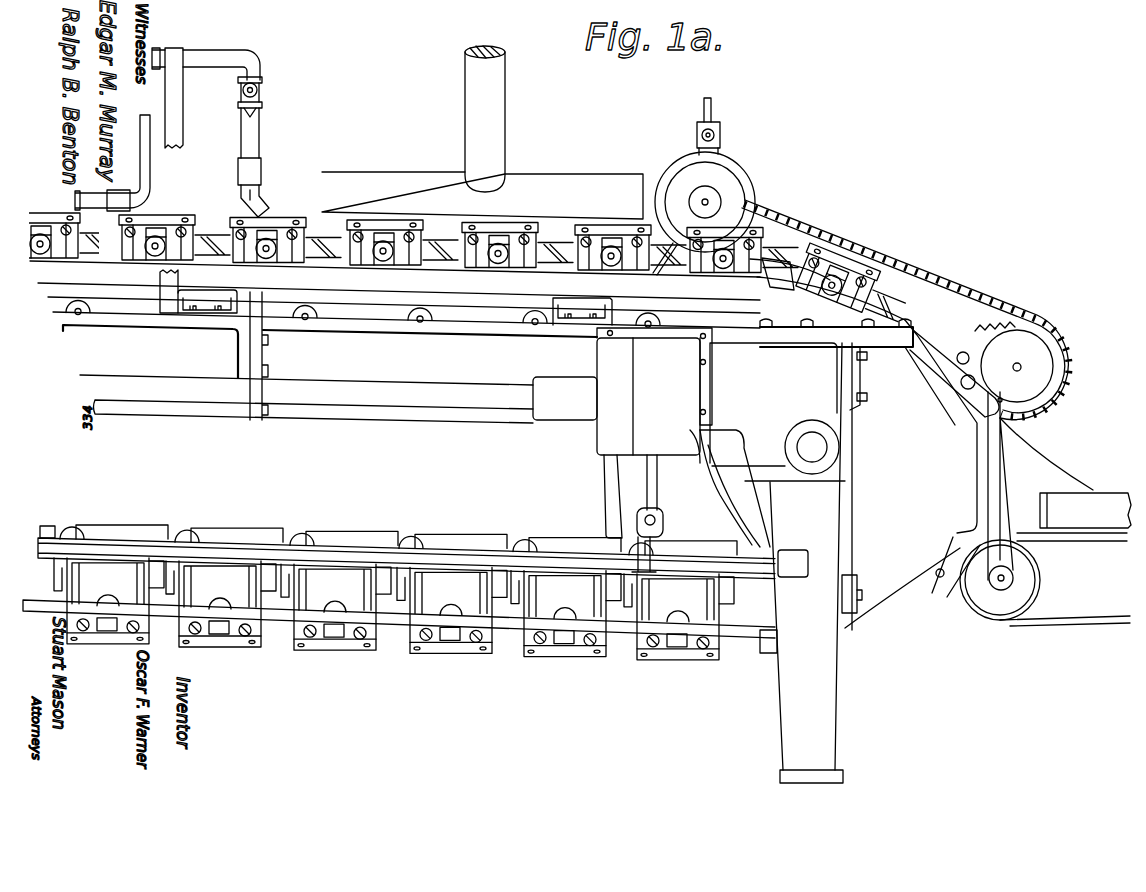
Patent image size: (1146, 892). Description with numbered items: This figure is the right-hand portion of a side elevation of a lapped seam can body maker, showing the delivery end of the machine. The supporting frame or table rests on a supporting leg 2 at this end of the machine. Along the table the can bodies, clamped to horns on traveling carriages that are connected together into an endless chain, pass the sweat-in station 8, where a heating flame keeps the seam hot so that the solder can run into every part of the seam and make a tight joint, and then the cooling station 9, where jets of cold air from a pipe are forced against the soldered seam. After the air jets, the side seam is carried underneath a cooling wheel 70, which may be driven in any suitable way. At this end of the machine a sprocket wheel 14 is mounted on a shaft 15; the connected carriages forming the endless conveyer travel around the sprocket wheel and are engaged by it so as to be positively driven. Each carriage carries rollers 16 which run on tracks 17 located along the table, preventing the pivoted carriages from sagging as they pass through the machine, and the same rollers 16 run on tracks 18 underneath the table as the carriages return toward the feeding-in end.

The supporting legs 2 is at (823, 688).
The sweat-in station 8 is at (262, 210).
The cooling station 9 is at (528, 190).
The sprocket wheel 14 is at (730, 503).
The shaft 15 is at (808, 448).
The rollers 16 is at (428, 320).
The tracks 17 is at (370, 328).
The tracks 18 is at (268, 615).
The cooling wheel 70 is at (732, 196).